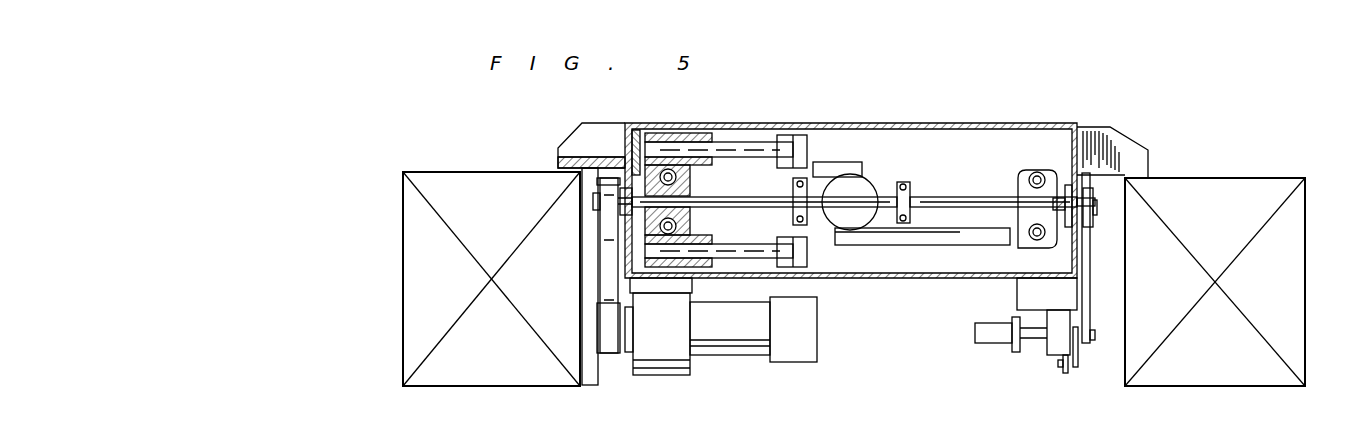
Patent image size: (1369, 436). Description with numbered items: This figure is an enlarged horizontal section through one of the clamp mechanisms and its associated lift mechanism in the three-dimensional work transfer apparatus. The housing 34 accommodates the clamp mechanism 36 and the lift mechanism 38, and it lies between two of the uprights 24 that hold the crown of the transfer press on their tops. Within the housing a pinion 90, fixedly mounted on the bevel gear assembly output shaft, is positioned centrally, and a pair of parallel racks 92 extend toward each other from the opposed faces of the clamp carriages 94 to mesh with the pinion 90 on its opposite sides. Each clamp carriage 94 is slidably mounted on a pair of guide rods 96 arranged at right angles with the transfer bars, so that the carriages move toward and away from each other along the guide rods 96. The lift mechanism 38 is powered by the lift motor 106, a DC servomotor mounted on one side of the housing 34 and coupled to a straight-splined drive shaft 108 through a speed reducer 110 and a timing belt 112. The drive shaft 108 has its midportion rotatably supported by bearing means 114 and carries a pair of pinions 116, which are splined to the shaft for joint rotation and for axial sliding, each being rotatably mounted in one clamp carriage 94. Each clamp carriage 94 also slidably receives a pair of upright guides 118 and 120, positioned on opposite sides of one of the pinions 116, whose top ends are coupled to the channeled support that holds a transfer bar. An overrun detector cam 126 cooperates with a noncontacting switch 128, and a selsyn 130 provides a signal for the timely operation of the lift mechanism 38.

The upright 24 is at (466, 182).
The housing 34 is at (893, 279).
The clamp mechanism 36 is at (1096, 122).
The lift mechanism 38 is at (586, 366).
The pinion 90 is at (870, 182).
The rack 92 is at (845, 162).
The clamp carriage 94 is at (681, 134).
The guide rod 96 is at (757, 145).
The lift motor 106 is at (735, 356).
The drive shaft 108 is at (742, 208).
The speed reducer 110 is at (668, 378).
The timing belt 112 is at (600, 268).
The bearing means 114 is at (912, 190).
The pinion 116 is at (690, 183).
The upright guide 118 is at (632, 157).
The upright guide 120 is at (678, 234).
The overrun detector cam 126 is at (1078, 360).
The noncontacting switch 128 is at (1063, 372).
The selsyn 130 is at (997, 340).